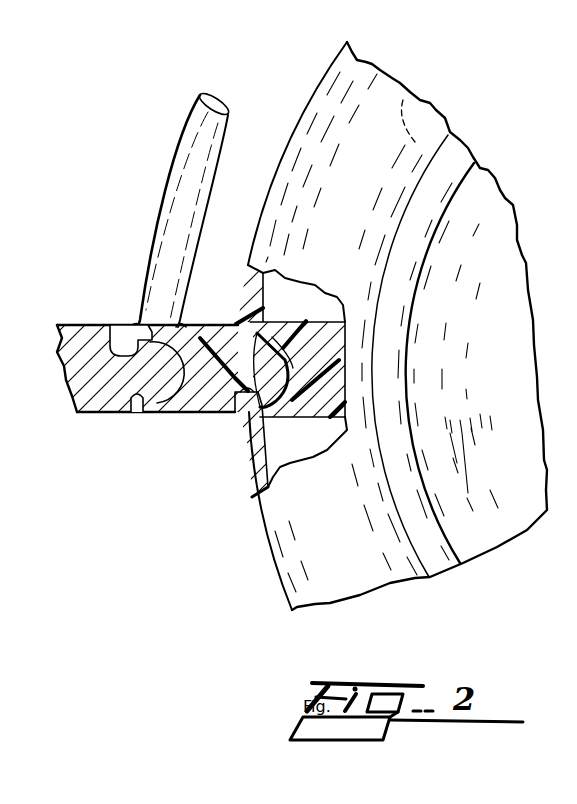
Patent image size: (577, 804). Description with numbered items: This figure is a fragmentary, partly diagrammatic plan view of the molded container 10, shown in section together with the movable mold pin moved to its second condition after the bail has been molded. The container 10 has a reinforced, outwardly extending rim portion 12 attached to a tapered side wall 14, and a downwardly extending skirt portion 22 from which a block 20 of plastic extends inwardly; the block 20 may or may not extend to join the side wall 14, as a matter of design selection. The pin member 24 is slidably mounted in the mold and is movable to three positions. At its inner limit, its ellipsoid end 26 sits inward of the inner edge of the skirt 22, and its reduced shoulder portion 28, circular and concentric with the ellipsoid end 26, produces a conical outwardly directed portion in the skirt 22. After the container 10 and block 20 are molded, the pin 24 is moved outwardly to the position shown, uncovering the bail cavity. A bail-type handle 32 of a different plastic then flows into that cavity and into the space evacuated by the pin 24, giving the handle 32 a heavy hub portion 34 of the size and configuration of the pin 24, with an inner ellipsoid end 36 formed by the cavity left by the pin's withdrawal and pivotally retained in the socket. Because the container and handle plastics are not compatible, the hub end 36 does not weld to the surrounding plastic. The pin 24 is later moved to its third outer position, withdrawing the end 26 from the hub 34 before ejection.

The molded container 10 is at (509, 128).
The rim portion 12 is at (383, 77).
The tapered side wall 14 is at (401, 92).
The block 20 is at (302, 301).
The skirt portion 22 is at (248, 453).
The pin member 24 is at (93, 404).
The ellipsoid end 26 is at (142, 406).
The reduced shoulder portion 28 is at (112, 348).
The bail-type handle 32 is at (156, 212).
The hub portion 34 is at (211, 327).
The inner ellipsoid end 36 is at (301, 417).